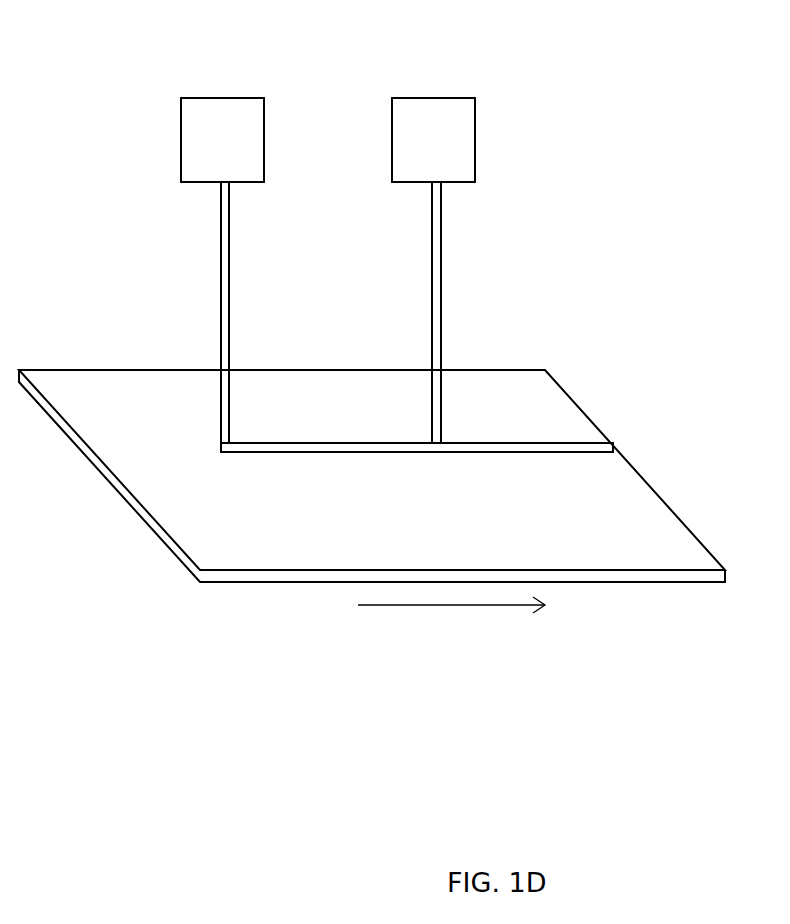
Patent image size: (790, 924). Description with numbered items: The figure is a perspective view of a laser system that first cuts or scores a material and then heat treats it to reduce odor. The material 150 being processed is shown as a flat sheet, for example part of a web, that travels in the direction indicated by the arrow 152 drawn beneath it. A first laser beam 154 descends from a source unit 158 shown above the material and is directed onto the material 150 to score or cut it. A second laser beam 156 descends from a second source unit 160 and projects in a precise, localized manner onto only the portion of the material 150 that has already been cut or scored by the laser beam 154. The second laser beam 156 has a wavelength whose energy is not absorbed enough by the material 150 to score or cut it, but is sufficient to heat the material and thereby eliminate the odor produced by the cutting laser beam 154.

The material 150 is at (121, 396).
The arrow 152 is at (450, 607).
The laser beam 154 is at (221, 248).
The second laser beam 156 is at (441, 297).
The first sensor box 158 is at (220, 97).
The second sensor box 160 is at (440, 97).